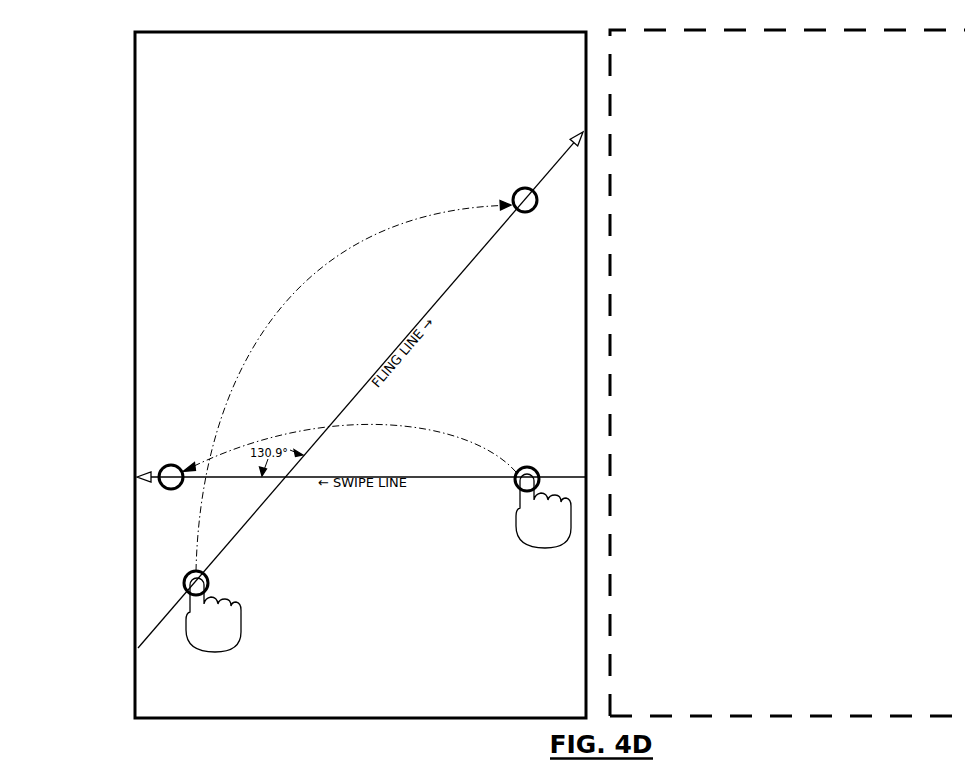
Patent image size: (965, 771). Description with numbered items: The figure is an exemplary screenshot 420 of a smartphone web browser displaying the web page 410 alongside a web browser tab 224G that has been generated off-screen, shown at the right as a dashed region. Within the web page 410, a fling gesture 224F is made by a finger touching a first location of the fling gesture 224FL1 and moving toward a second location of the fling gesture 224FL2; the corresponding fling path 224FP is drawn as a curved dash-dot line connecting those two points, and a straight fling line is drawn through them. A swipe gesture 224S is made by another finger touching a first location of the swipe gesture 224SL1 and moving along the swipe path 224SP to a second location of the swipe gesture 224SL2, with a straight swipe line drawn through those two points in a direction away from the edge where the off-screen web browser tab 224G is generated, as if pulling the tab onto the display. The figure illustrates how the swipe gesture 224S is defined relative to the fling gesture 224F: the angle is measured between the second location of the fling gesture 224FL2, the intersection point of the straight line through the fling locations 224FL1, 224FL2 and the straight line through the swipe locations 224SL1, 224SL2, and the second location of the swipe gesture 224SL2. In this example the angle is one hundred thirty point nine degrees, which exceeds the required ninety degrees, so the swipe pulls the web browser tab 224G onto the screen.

The web page 410 is at (360, 375).
The screenshot 420 is at (608, 12).
The web browser tab 224G is at (787, 373).
The fling path 224FP is at (353, 386).
The swipe path 224SP is at (349, 445).
The first location of the fling gesture 224FL1 is at (220, 583).
The second location of the fling gesture 224FL2 is at (525, 193).
The first location of the swipe gesture 224SL1 is at (526, 470).
The second location of the swipe gesture 224SL2 is at (169, 487).
The fling gesture 224F is at (213, 615).
The swipe gesture 224S is at (543, 511).